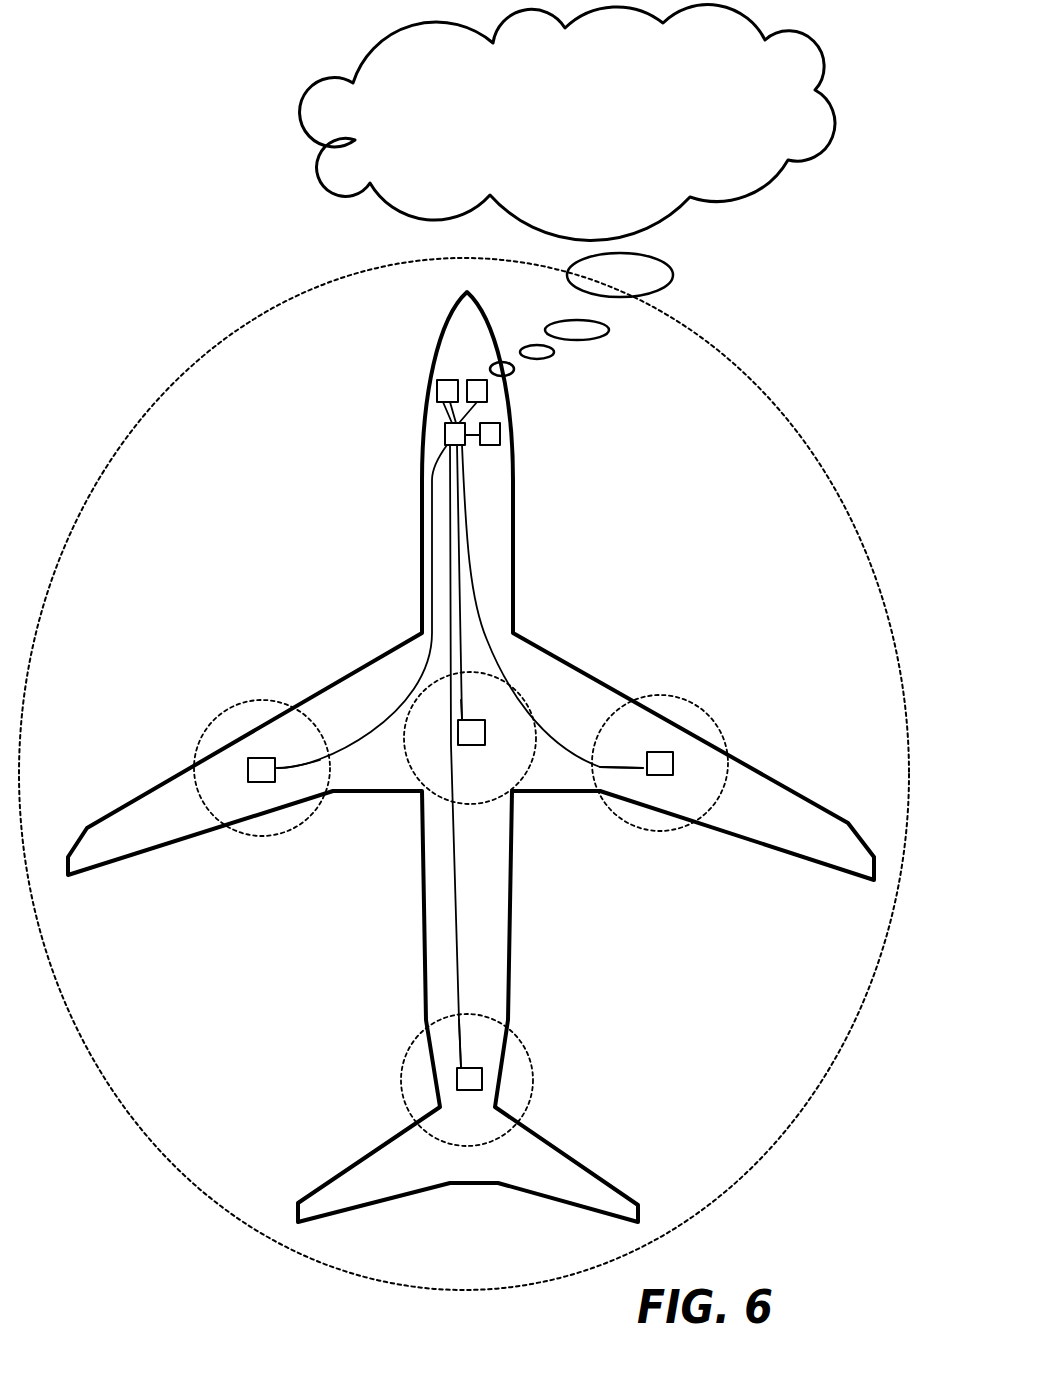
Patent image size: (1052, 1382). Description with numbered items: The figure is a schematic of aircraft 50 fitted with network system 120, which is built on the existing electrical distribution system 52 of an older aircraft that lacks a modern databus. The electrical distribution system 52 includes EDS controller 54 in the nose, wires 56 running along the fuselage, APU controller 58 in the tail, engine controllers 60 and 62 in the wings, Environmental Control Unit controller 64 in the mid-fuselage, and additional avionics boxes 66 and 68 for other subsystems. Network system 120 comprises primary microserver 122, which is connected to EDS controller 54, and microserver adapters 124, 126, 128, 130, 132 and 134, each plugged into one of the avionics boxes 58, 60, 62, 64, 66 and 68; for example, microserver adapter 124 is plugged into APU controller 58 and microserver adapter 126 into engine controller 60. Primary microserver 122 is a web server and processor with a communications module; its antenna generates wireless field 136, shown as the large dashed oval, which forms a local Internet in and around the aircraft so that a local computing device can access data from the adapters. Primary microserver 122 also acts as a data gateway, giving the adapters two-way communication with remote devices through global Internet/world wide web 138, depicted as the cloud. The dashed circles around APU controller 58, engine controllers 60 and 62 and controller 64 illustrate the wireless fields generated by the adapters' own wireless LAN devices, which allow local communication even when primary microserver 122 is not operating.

The network system 120 is at (197, 267).
The wireless field 136 is at (215, 347).
The global Internet/world wide web 138 is at (690, 180).
The electrical distribution system 52 is at (302, 533).
The aircraft 50 is at (495, 348).
The Electrical Distribution System (EDS) controller 54 is at (463, 443).
The wires 56 is at (432, 457).
The Auxiliary Power Unit (APU) controller 58 is at (482, 1078).
The engine controller 60 is at (250, 758).
The engine controller 62 is at (673, 753).
The Environmental Control Unit controller 64 is at (470, 745).
The avionics box 66 is at (443, 380).
The avionics box 68 is at (487, 392).
The primary microserver 122 is at (500, 435).
The microserver adapter 124 is at (463, 1066).
The microserver adapter 126 is at (277, 768).
The microserver adapter 128 is at (643, 770).
The microserver adapter 130 is at (465, 718).
The microserver adapter 132 is at (432, 410).
The microserver adapter 134 is at (470, 408).